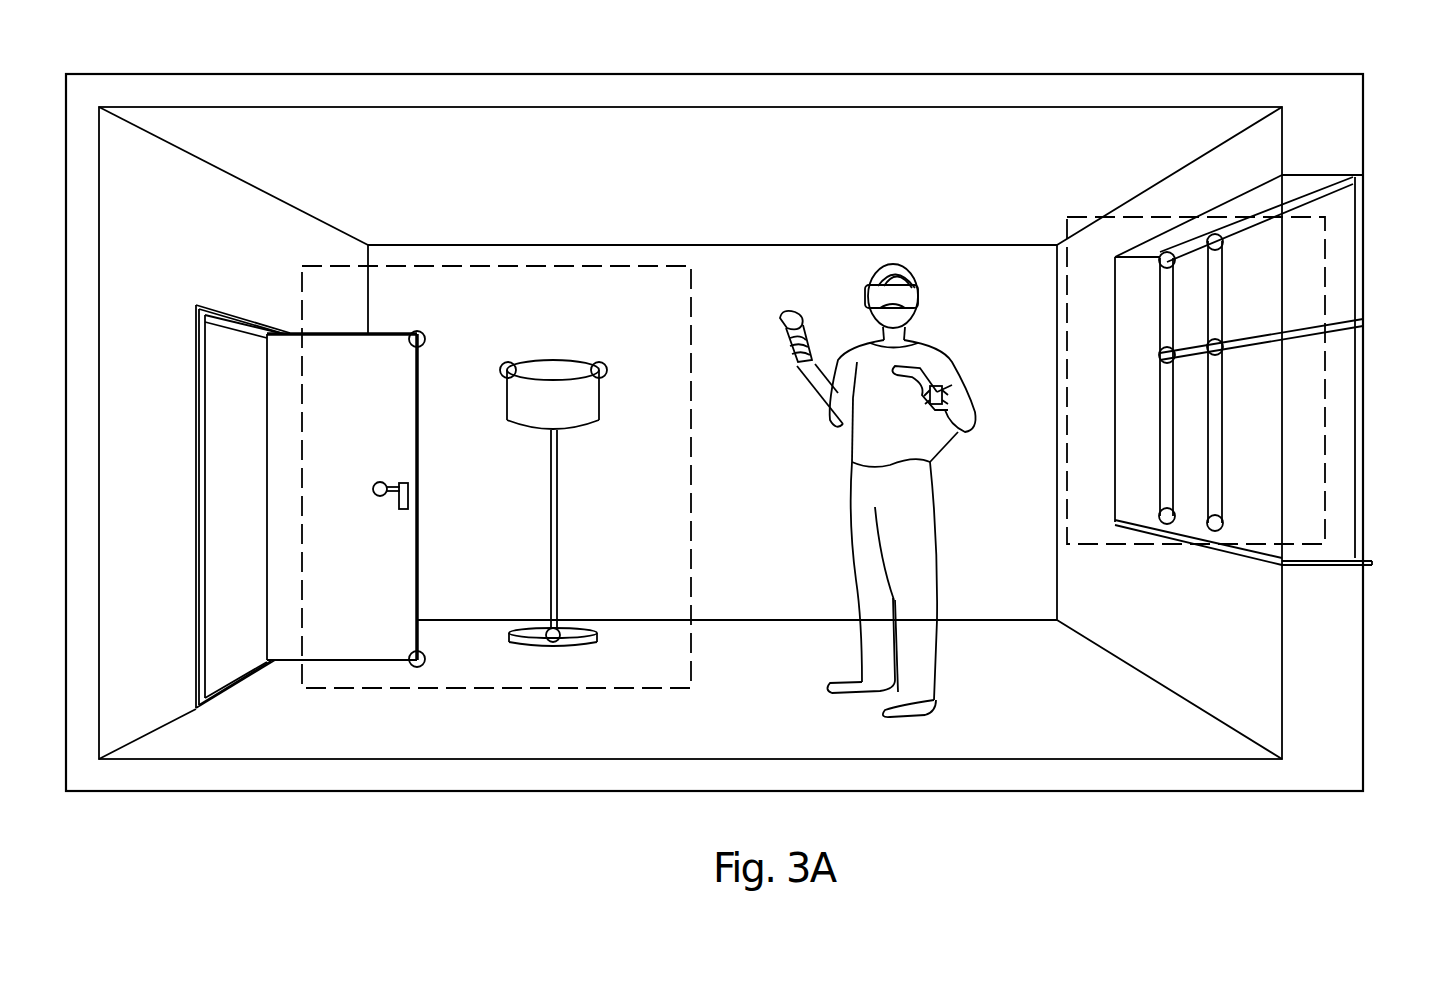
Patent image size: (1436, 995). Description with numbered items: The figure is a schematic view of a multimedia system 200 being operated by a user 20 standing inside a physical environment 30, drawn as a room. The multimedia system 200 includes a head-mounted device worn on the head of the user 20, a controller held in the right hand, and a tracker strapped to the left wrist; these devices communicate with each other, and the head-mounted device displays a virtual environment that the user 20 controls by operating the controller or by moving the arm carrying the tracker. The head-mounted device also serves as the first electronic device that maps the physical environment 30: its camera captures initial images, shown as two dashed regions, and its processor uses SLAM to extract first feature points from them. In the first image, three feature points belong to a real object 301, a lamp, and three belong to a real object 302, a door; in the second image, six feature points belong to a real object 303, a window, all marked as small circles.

The physical environment 30 is at (648, 127).
The real object (door) 302 is at (325, 333).
The real object (lamp) 301 is at (600, 395).
The real object (window) 303 is at (1285, 468).
The multimedia system 200 is at (744, 293).
The user 20 is at (925, 340).